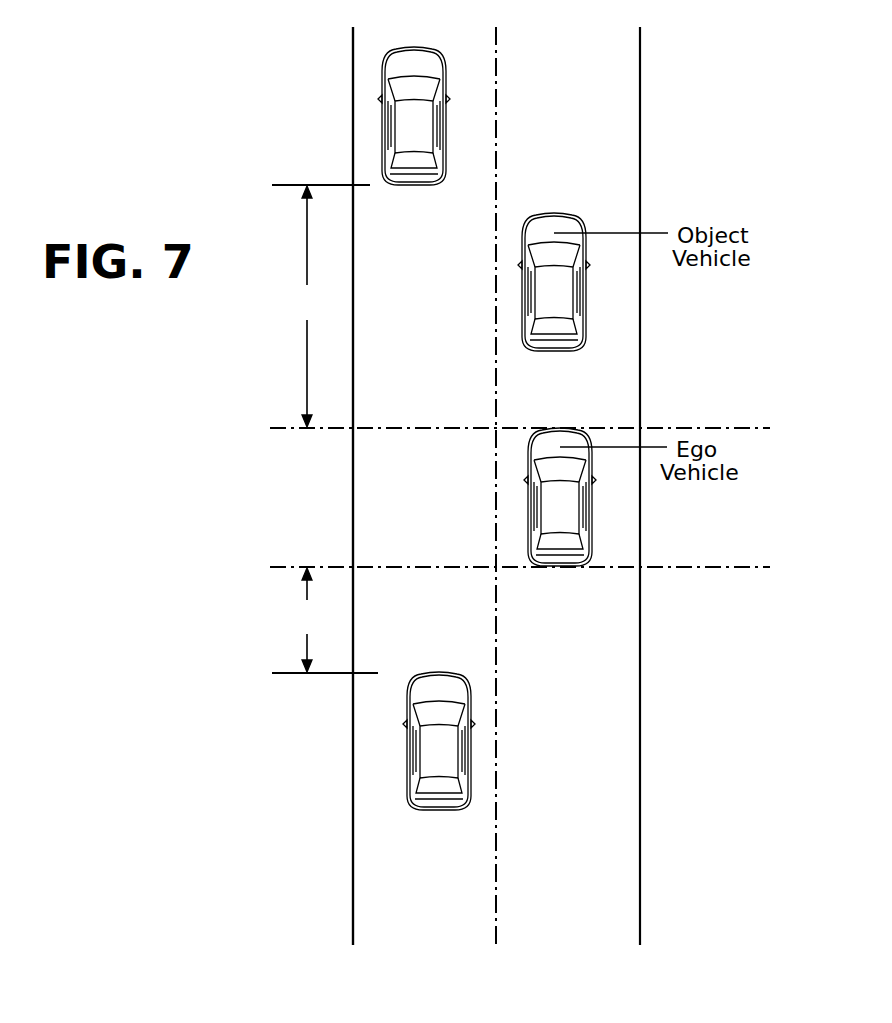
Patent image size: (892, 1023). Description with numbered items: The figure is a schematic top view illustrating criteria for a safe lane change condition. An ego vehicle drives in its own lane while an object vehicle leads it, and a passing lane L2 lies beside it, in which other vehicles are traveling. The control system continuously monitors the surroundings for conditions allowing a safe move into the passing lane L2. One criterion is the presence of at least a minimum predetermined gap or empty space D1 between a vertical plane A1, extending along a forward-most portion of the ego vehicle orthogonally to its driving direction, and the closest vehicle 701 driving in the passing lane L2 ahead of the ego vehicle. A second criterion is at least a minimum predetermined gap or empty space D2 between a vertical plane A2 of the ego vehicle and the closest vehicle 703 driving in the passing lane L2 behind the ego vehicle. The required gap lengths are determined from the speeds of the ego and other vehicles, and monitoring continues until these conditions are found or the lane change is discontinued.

The closest vehicle ahead 701 is at (413, 130).
The closest vehicle behind 703 is at (437, 755).
The vertical plane A1 is at (538, 429).
The vertical plane A2 is at (538, 569).
The minimum predetermined gap D1 is at (311, 306).
The minimum predetermined gap D2 is at (311, 620).
The passing lane L2 is at (393, 486).